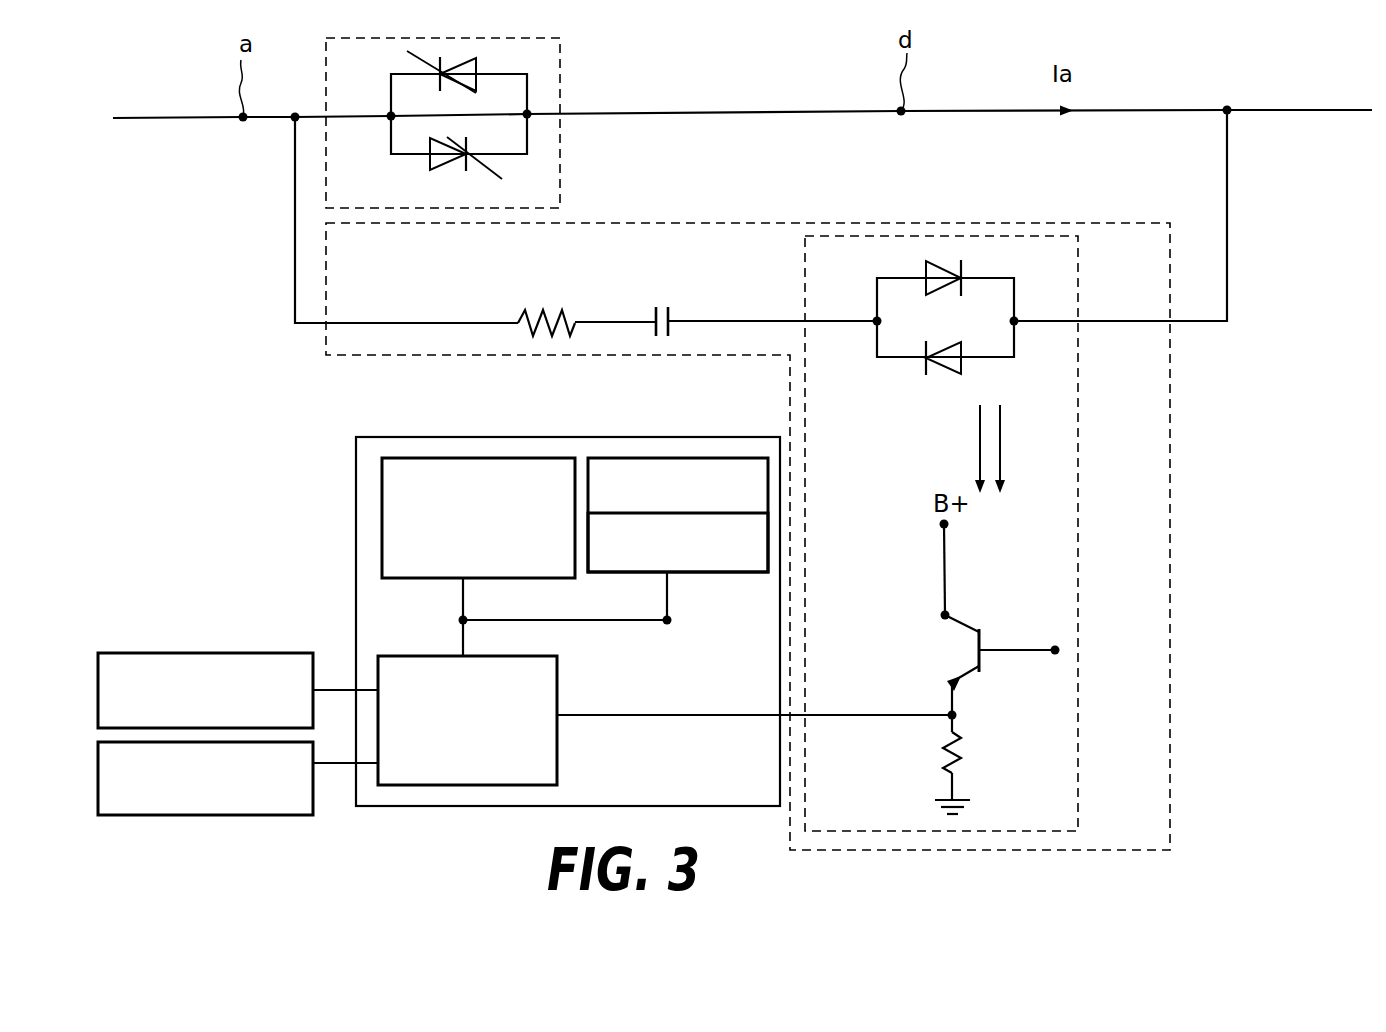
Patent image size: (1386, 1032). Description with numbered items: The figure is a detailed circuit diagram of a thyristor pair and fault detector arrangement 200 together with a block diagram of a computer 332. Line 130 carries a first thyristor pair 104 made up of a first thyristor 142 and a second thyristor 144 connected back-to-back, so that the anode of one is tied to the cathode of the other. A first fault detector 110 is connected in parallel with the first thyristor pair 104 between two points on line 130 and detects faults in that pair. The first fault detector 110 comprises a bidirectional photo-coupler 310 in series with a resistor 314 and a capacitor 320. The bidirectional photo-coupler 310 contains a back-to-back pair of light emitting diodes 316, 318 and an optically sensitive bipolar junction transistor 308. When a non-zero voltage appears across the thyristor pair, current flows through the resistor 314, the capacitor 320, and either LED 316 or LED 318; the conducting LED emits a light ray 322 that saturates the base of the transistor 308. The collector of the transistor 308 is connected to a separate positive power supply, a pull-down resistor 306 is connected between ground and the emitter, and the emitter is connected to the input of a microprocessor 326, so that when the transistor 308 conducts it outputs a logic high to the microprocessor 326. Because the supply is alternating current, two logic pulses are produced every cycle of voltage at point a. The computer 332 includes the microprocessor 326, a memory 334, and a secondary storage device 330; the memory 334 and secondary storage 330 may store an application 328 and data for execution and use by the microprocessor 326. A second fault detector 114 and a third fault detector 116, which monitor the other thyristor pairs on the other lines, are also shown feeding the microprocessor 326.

The line 130 is at (182, 117).
The fault detection and interruption circuit 200 is at (1192, 29).
The first thyristor pair 104 is at (560, 74).
The first thyristor 142 is at (478, 61).
The second thyristor 144 is at (430, 158).
The first fault detector 110 is at (1170, 544).
The resistor 314 is at (556, 316).
The capacitor 320 is at (665, 308).
The bidirectional photo-coupler 310 is at (1078, 409).
The light emitting diode 316 is at (927, 274).
The light emitting diode 318 is at (962, 360).
The light ray 322 is at (978, 461).
The optically-sensitive bipolar junction transistor 308 is at (943, 650).
The pull-down resistor 306 is at (940, 745).
The computer 332 is at (356, 535).
The secondary storage device 330 is at (415, 578).
The memory 334 is at (720, 458).
The application 328 is at (728, 573).
The microprocessor 326 is at (557, 680).
The second fault detector 114 is at (207, 653).
The third fault detector 116 is at (205, 815).